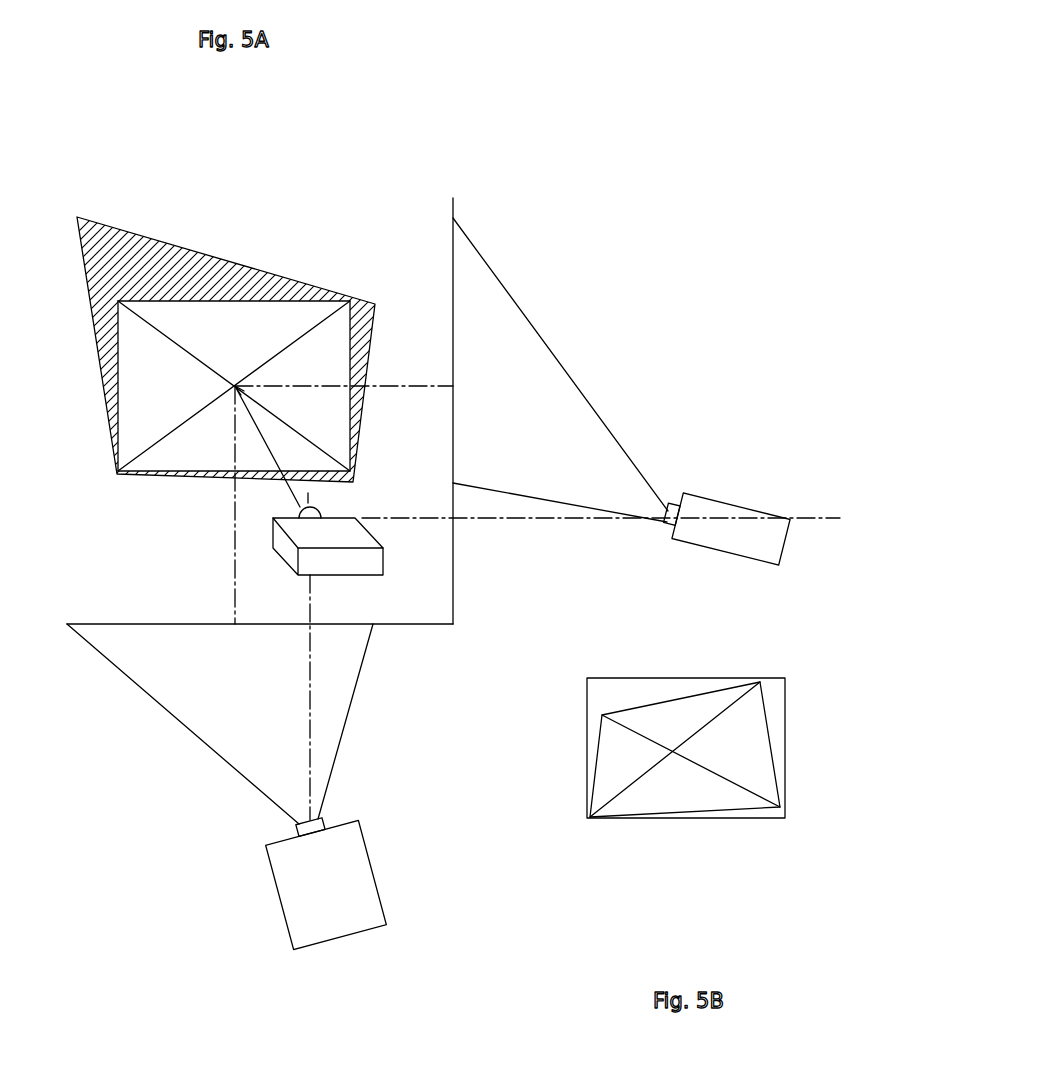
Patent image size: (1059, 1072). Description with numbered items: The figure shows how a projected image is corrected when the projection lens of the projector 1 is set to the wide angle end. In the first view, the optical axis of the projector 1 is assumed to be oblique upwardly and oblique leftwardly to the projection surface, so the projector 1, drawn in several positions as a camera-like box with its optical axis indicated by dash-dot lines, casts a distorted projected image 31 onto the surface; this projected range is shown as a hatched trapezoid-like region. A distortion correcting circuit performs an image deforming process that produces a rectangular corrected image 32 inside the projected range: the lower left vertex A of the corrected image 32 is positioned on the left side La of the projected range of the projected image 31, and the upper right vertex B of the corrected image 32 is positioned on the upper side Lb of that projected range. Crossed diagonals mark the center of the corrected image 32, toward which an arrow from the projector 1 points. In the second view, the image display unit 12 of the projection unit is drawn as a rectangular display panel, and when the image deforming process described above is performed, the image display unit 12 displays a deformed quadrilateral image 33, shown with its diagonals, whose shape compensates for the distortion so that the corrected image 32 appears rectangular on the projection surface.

In FIG. 5A, the projector 1 is at (363, 538).
In FIG. 5A, the projected image 31 is at (262, 280).
In FIG. 5A, the corrected image 32 is at (175, 313).
In FIG. 5B, the deformed quadrilateral image 33 is at (752, 727).
In FIG. 5B, the image display unit 12 is at (767, 820).
In FIG. 5A, the left side of the projected range La is at (100, 357).
In FIG. 5A, the upper side of the projected range Lb is at (210, 253).
In FIG. 5A, the lower left vertex A is at (117, 477).
In FIG. 5A, the upper right vertex B is at (350, 300).